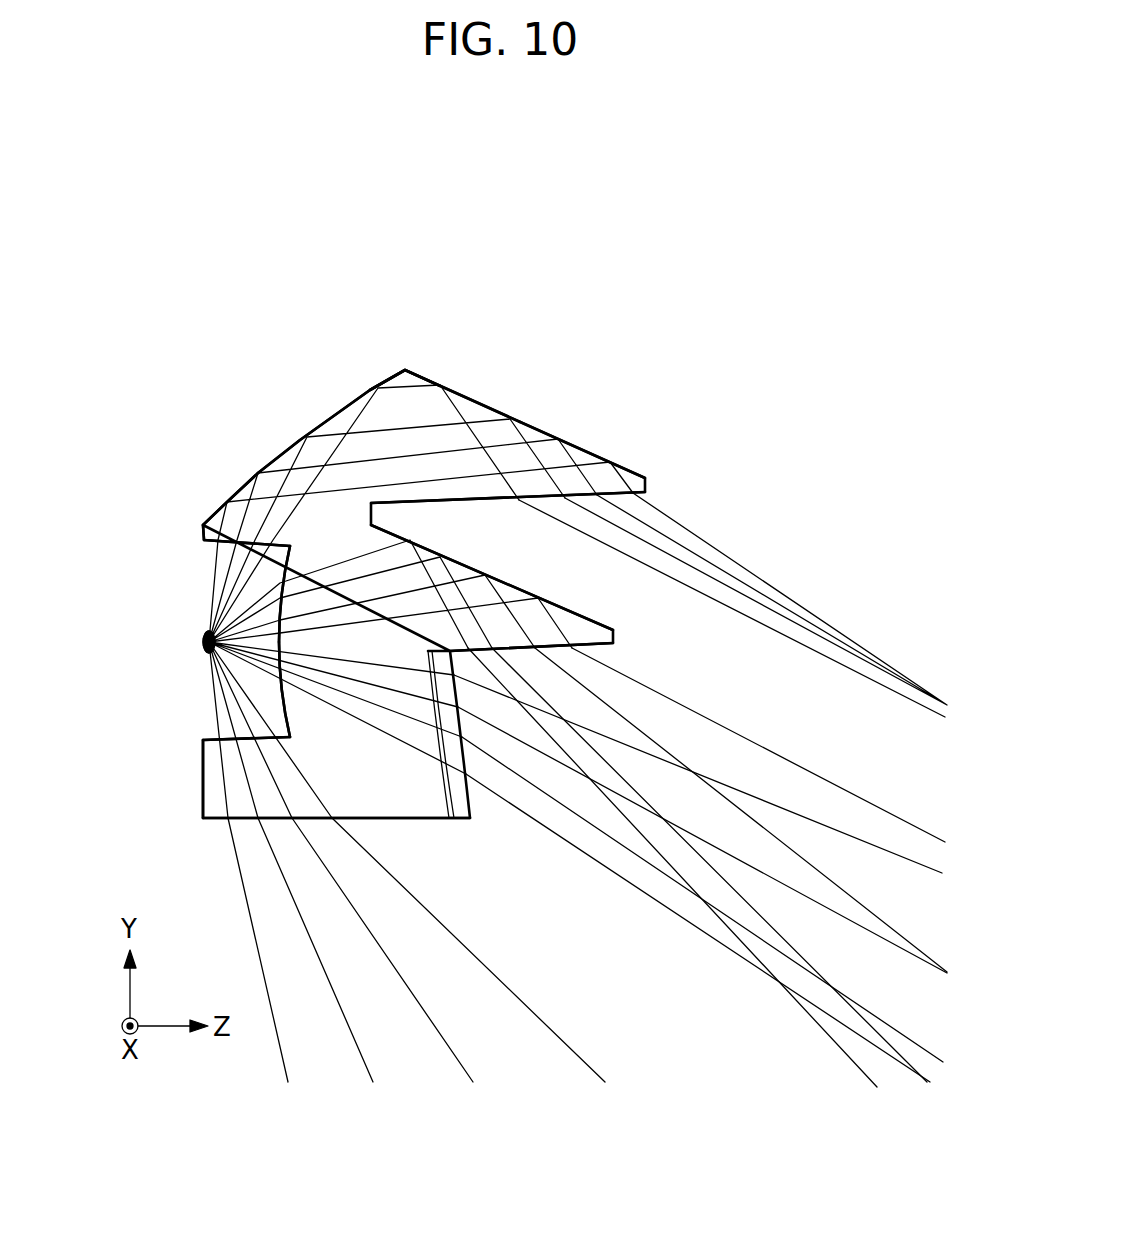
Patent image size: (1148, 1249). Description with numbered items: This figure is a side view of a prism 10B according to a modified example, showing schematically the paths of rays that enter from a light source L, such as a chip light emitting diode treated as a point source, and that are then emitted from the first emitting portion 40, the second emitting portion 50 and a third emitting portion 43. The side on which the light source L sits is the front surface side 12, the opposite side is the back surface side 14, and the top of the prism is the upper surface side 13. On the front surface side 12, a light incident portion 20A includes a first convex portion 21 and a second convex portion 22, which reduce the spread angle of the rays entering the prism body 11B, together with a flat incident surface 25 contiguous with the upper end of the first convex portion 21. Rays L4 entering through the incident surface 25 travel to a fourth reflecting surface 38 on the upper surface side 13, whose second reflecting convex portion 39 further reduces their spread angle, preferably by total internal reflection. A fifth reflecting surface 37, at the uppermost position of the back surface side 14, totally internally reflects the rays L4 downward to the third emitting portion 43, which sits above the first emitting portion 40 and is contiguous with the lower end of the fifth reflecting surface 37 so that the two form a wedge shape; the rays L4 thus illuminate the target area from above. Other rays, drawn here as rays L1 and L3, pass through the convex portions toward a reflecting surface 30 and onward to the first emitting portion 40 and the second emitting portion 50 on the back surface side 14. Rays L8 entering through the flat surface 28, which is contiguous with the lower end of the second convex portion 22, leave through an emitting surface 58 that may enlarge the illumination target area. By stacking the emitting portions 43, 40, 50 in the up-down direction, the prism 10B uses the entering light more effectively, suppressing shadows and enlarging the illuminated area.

The prism 10B is at (538, 312).
The upper surface side 13 is at (396, 356).
The second reflecting convex portion 39 is at (267, 418).
The fourth reflecting surface 38 is at (266, 456).
The prism body 11B is at (490, 410).
The fifth reflecting surface 37 is at (584, 447).
The incident surface 25 is at (203, 544).
The third emitting portion 43 is at (480, 504).
The first convex portion 21 is at (280, 573).
The second convex portion 22 is at (280, 686).
The flat surface 28 is at (203, 739).
The reflective surface 30 is at (560, 606).
The first emitting portion 40 is at (613, 641).
The emitting surface 58 is at (204, 818).
The second emitting portion 50 is at (470, 795).
The front surface side 12 is at (130, 625).
The light source L is at (202, 642).
The light incident portion 20A is at (179, 672).
The back surface side 14 is at (694, 678).
The light ray L1 is at (312, 572).
The rays L4 is at (416, 498).
The light ray L3 is at (330, 716).
The rays L8 is at (203, 790).